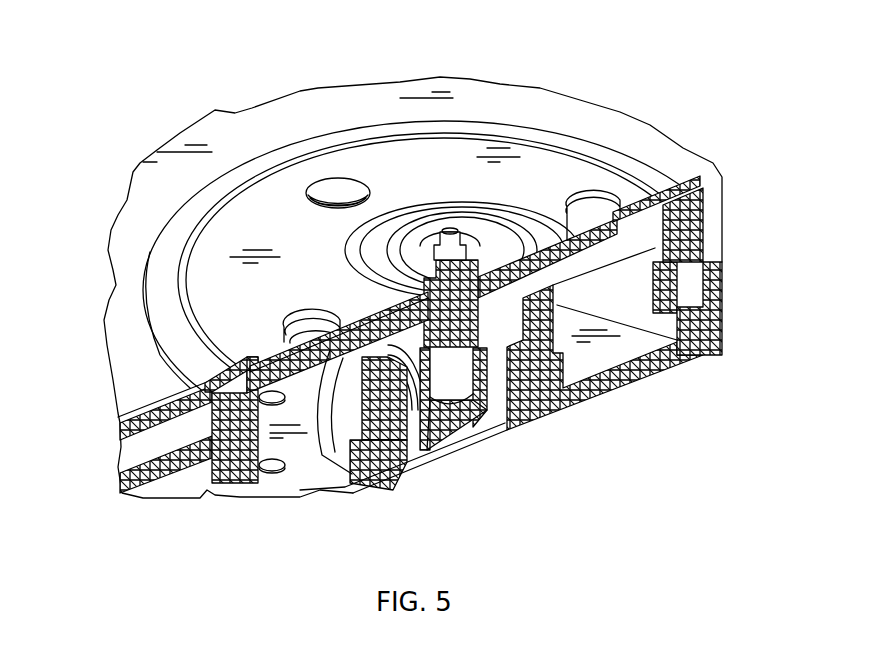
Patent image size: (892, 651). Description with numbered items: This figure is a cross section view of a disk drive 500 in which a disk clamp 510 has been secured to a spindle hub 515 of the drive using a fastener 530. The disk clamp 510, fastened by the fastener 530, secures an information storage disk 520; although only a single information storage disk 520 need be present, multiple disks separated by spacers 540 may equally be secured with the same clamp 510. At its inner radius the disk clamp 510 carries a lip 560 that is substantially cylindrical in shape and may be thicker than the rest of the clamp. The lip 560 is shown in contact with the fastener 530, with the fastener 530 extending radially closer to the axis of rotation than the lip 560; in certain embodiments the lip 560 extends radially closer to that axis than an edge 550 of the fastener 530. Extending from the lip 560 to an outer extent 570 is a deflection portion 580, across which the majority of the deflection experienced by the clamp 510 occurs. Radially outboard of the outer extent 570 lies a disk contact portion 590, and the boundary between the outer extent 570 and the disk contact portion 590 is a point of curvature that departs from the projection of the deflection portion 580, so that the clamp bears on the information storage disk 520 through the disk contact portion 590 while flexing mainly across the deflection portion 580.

The disk drive 500 is at (570, 72).
The disk clamp 510 is at (227, 243).
The spindle hub 515 is at (375, 465).
The information storage disk 520 is at (220, 130).
The fastener 530 is at (465, 215).
The spacers 540 is at (226, 420).
The edge 550 is at (503, 213).
The lip 560 is at (538, 405).
The outer extent 570 is at (670, 199).
The deflection portion 580 is at (600, 263).
The disk contact portion 590 is at (703, 185).